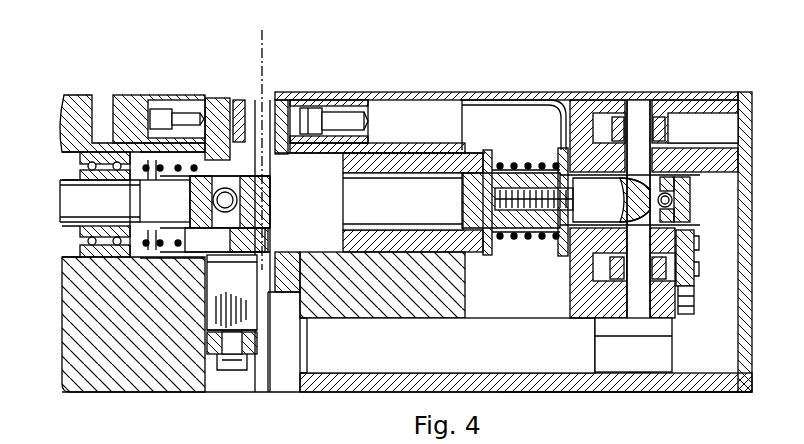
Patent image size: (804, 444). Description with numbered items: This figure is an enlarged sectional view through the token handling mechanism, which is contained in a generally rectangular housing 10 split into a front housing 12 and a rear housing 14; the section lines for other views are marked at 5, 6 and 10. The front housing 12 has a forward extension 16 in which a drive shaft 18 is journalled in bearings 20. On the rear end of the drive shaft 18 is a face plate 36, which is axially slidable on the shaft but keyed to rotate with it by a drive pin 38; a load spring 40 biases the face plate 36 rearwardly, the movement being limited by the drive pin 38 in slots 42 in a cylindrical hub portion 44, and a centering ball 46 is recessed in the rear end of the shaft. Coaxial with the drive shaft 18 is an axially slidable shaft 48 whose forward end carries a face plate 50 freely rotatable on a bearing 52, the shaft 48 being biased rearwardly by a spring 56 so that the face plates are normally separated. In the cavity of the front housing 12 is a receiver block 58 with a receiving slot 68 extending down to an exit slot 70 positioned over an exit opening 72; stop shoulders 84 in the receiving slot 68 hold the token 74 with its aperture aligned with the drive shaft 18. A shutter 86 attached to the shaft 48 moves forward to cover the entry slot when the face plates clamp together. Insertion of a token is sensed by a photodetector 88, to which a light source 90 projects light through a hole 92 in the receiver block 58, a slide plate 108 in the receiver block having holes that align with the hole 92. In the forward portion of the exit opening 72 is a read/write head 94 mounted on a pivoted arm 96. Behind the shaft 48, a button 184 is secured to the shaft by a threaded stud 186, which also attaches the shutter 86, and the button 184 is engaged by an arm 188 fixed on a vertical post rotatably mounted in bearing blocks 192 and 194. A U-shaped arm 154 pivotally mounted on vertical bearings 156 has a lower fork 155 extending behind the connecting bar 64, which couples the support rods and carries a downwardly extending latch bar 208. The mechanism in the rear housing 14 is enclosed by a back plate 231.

The section line 5- 5 is at (58, 117).
The section line 6- 6 is at (725, 77).
The housing 10 is at (231, 82).
The front housing 12 is at (396, 383).
The rear housing 14 is at (563, 378).
The forward extension 16 is at (90, 105).
The drive shaft 18 is at (68, 200).
The bearings 20 is at (76, 238).
The face plate 36 is at (340, 270).
The drive pin 38 is at (186, 248).
The load spring 40 is at (158, 250).
The slots 42 is at (190, 252).
The cylindrical hub portion 44 is at (155, 101).
The centering ball 46 is at (212, 312).
The axially slidable shaft 48 is at (432, 186).
The face plate 50 is at (348, 254).
The bearing 52 is at (330, 216).
The spring 56 is at (506, 160).
The receiver block 58 is at (451, 345).
The connecting bar 64 is at (692, 268).
The receiving slot 68 is at (279, 238).
The exit slot 70 is at (262, 302).
The exit opening 72 is at (298, 390).
The token 74 is at (270, 34).
The stop shoulders 84 is at (270, 210).
The shutter 86 is at (412, 93).
The photodetector 88 is at (185, 118).
The light source 90 is at (326, 115).
The hole 92 is at (220, 112).
The read/write head 94 is at (218, 310).
The arm 96 is at (262, 360).
The slide plate 108 is at (240, 102).
The arm 154 is at (668, 130).
The lower fork 155 is at (592, 306).
The vertical bearings 156 is at (637, 98).
The button 184 is at (560, 160).
The threaded stud 186 is at (510, 226).
The arm 188 is at (690, 204).
The bearing block 192 is at (706, 166).
The bearing block 194 is at (672, 334).
The latch bar 208 is at (690, 310).
The back plate 231 is at (736, 95).